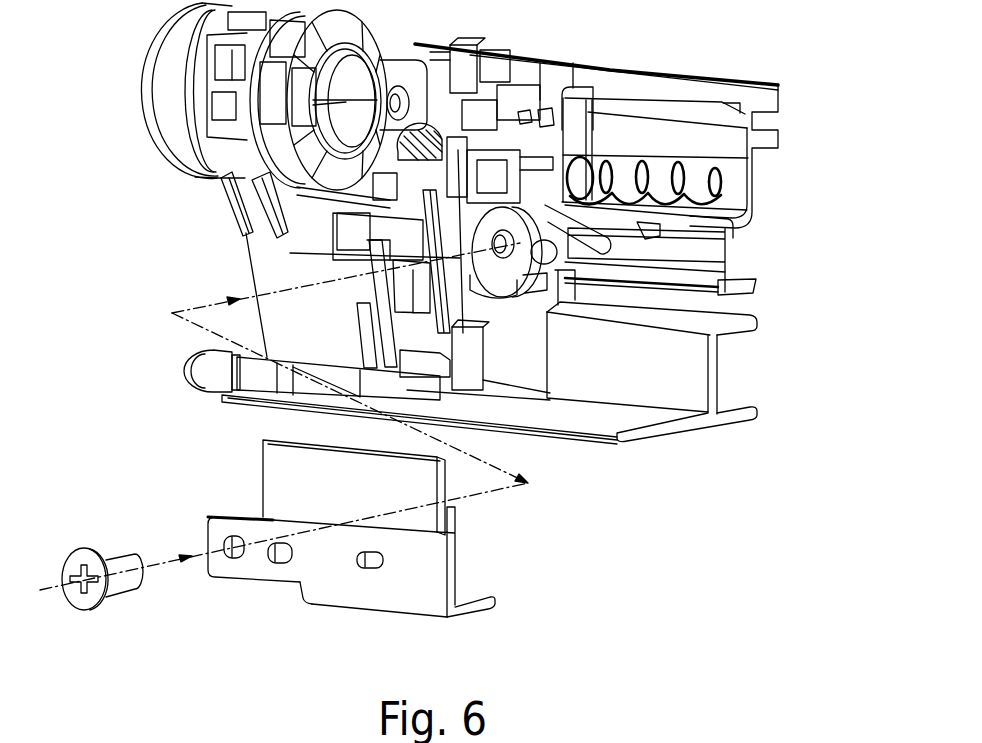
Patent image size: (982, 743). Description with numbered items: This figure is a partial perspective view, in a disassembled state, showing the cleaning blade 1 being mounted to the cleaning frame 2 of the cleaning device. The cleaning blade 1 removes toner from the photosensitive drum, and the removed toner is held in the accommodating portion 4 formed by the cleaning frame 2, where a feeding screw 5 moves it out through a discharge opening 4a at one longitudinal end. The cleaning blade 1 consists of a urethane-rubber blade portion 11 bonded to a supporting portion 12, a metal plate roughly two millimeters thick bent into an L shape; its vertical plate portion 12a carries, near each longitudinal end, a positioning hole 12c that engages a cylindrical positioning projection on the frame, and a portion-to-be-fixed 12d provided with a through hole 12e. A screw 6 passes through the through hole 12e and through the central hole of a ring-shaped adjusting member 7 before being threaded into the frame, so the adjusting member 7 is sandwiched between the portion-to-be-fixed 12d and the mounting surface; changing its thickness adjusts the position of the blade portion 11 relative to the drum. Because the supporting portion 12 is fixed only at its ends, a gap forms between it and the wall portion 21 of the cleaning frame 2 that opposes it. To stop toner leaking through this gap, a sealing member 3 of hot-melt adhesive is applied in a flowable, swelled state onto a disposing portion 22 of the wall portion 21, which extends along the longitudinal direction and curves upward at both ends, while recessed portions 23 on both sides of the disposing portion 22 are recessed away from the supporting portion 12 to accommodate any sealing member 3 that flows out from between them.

The cleaning blade 1 is at (332, 606).
The cleaning frame 2 is at (753, 162).
The sealing member 3 is at (736, 258).
The accommodating portion 4 is at (642, 147).
The discharge opening 4a is at (586, 148).
The feeding screw 5 is at (722, 170).
The screw 6 is at (90, 550).
The adjusting member 7 is at (517, 263).
The blade portion 11 is at (263, 453).
The supporting portion 12 is at (345, 563).
The vertical plate portion 12a is at (412, 585).
The positioning hole 12c is at (282, 565).
The portion-to-be-fixed 12d is at (222, 577).
The through hole 12e is at (229, 540).
The wall portion 21 is at (606, 228).
The disposing portion 22 is at (740, 268).
The recessed portions 23 is at (738, 242).